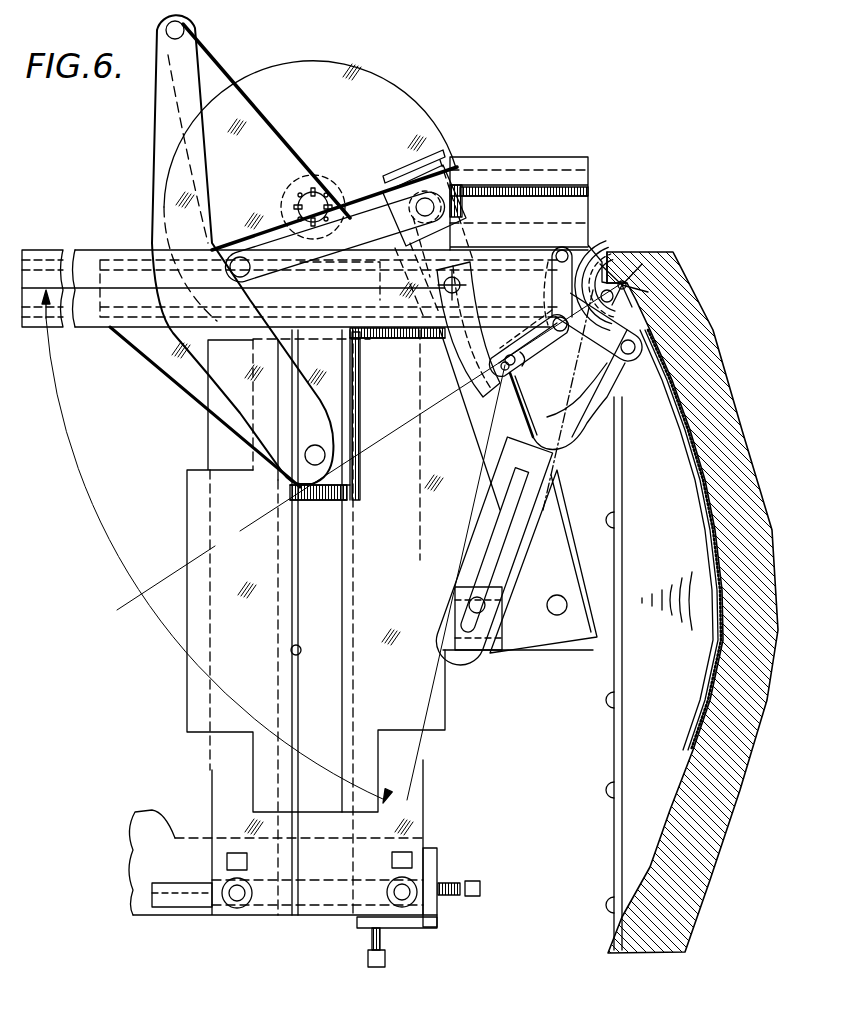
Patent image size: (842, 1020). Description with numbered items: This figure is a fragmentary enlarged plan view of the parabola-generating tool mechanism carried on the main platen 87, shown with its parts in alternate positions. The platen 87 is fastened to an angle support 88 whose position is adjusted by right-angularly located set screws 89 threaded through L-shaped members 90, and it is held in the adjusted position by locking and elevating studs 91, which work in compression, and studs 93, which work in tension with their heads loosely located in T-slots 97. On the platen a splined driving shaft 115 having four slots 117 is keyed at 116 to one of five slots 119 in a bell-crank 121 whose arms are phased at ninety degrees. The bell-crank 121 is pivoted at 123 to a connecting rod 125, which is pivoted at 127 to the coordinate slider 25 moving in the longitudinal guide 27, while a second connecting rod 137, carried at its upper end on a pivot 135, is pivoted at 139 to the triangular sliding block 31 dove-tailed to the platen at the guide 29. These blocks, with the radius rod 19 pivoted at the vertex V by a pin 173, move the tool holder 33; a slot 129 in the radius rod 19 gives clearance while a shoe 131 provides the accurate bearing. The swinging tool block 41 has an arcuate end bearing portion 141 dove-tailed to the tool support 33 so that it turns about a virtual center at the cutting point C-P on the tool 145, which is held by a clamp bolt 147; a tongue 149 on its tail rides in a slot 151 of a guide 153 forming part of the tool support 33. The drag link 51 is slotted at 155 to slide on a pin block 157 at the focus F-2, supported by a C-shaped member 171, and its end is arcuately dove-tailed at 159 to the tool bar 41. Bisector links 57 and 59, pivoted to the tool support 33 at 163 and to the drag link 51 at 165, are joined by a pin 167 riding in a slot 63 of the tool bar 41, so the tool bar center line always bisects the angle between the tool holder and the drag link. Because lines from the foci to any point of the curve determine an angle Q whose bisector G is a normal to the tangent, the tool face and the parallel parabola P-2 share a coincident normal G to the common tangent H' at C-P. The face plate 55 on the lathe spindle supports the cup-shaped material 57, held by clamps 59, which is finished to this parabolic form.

The radius rod 19 is at (481, 470).
The coordinate slider 25 is at (466, 176).
The longitudinal guide 27 is at (549, 188).
The guide slot 29 is at (291, 651).
The second sliding block 31 is at (166, 372).
The tool holder 33 is at (46, 256).
The swinging tool block 41 is at (540, 362).
The drag link 51 is at (561, 465).
The face plate 55 is at (713, 868).
The bisector link 57 is at (551, 262).
The bisector link 59 is at (608, 520).
The slot 63 is at (518, 365).
The main platen 87 is at (187, 700).
The angle support 88 is at (212, 800).
The set screws 89 is at (458, 887).
The L-shaped members 90 is at (432, 927).
The locking and elevating studs 91 is at (247, 866).
The locking and elevating studs 93 is at (415, 898).
The T-slots 97 is at (183, 893).
The driving shaft 115 is at (300, 198).
The key 116 is at (313, 190).
The slots 117 is at (297, 210).
The slots 119 is at (309, 222).
The bell-crank 121 is at (262, 103).
The pivot 123 is at (334, 250).
The connecting rod 125 is at (376, 264).
The pivot 127 is at (438, 170).
The slot 129 is at (455, 213).
The shoe 131 is at (462, 180).
The pivot 135 is at (186, 30).
The connecting rod 137 is at (152, 170).
The pivot 139 is at (348, 488).
The arcuate end bearing portion 141 is at (551, 284).
The tool 145 is at (622, 283).
The clamp bolt 147 is at (612, 300).
The tongue 149 is at (517, 388).
The slot 151 is at (465, 378).
The guide 153 is at (458, 352).
The slot 155 is at (492, 551).
The pin block 157 is at (472, 598).
The dove-tailed slotted connection 159 is at (551, 311).
The pivot 163 is at (562, 250).
The pivot 165 is at (629, 356).
The pin 167 is at (548, 323).
The C-shaped member 171 is at (505, 653).
The pin 173 is at (560, 595).
The cutting point C-P is at (627, 283).
The parallel parabola P-2 is at (700, 801).
The common tangent H is at (760, 512).
The focus F-2 is at (493, 653).
The vertex V is at (555, 648).
The angle Q is at (217, 546).
The normal G is at (369, 446).